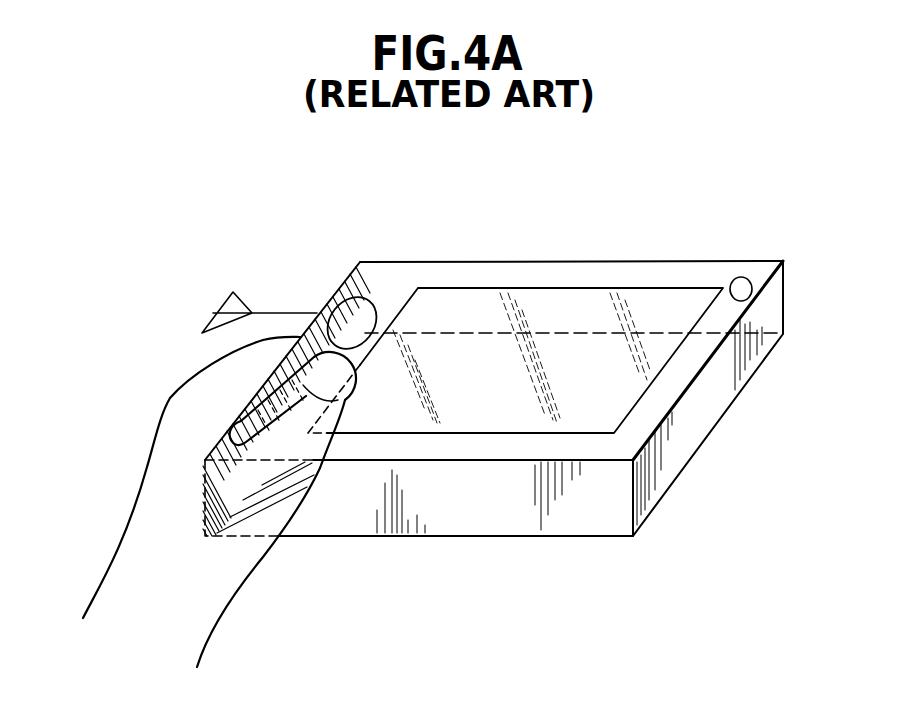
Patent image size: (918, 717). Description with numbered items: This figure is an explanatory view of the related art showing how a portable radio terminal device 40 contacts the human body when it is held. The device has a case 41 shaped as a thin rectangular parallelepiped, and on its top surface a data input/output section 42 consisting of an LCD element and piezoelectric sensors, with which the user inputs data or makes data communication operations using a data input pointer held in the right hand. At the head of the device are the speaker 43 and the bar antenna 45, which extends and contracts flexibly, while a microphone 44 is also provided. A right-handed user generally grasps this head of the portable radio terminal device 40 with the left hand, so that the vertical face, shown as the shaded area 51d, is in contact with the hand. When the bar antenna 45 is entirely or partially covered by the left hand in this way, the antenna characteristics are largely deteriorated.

The portable radio terminal device 40 is at (587, 259).
The case 41 is at (668, 467).
The data input/output section 42 is at (452, 307).
The speaker 43 is at (372, 297).
The microphone 44 is at (741, 277).
The bar antenna 45 is at (243, 297).
The shaded area 51d is at (215, 487).